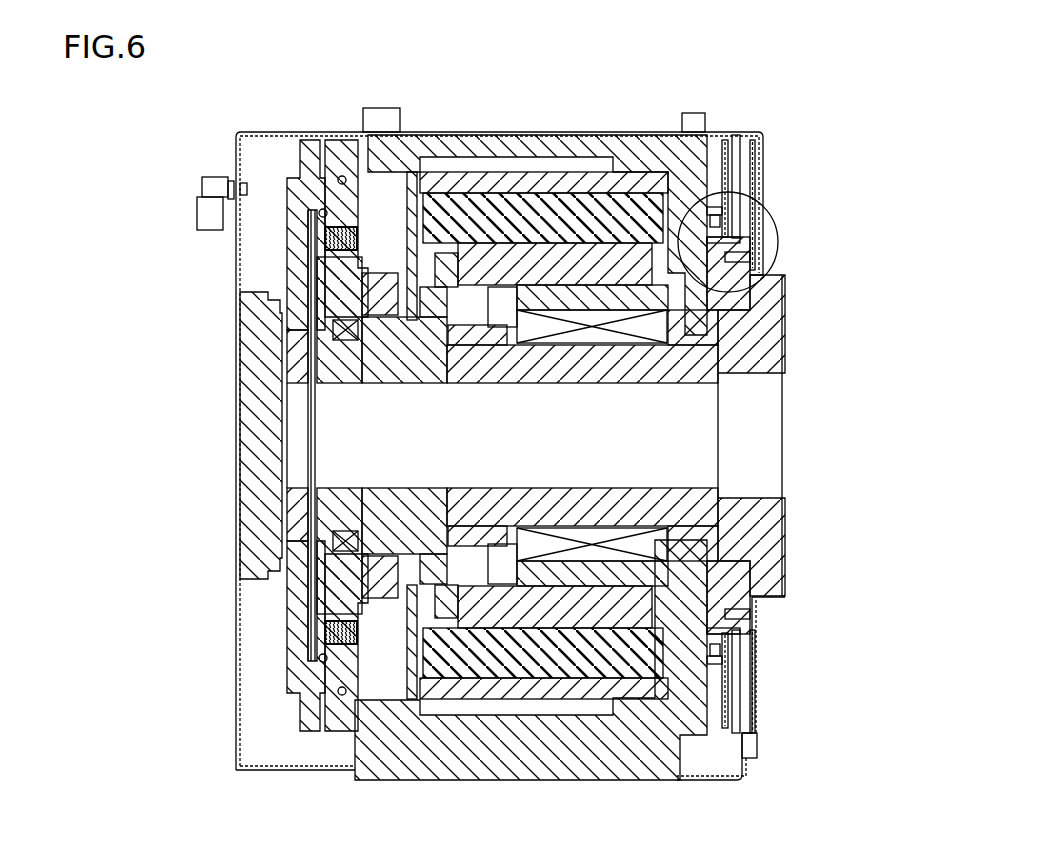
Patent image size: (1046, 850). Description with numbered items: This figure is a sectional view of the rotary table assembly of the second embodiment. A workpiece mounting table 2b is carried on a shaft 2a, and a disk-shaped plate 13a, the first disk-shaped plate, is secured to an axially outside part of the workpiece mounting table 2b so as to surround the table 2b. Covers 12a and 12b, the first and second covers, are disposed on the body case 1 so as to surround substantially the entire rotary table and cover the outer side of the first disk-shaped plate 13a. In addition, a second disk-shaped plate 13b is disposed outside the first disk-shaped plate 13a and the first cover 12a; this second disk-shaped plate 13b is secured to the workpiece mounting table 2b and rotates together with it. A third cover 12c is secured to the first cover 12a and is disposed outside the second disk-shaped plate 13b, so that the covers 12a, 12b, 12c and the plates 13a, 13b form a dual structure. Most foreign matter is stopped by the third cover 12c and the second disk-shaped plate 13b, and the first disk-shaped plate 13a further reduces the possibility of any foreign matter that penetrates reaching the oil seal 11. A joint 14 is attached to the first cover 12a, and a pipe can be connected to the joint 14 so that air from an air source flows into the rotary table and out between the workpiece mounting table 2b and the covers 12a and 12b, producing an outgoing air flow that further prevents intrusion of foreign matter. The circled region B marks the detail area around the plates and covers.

The body case 1 is at (438, 142).
The shaft 2a is at (680, 383).
The workpiece mounting table 2b is at (767, 517).
The oil seal 11 is at (700, 540).
The first cover 12a is at (660, 132).
The second cover 12b is at (747, 683).
The third cover 12c is at (743, 132).
The first disk-shaped plate 13a is at (740, 182).
The second disk-shaped plate 13b is at (753, 158).
The joint 14 is at (212, 228).
The detail region B is at (778, 248).